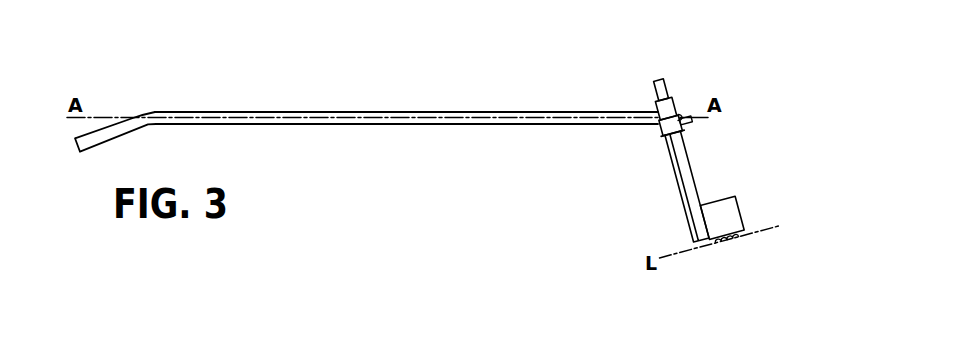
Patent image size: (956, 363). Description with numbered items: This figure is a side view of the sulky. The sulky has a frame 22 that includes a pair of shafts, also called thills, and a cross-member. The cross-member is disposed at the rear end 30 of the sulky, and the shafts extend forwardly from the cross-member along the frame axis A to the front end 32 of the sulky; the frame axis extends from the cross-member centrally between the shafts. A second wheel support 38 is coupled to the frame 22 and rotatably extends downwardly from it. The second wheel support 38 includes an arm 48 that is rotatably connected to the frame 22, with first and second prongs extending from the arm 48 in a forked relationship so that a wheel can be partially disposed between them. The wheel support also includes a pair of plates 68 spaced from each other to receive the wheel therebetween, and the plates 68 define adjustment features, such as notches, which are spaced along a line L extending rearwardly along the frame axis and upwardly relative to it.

The frame 22 is at (515, 106).
The front end 32 is at (110, 113).
The rear end 30 is at (690, 83).
The arm 48 is at (660, 129).
The second wheel support 38 is at (705, 190).
The plates 68 is at (720, 218).